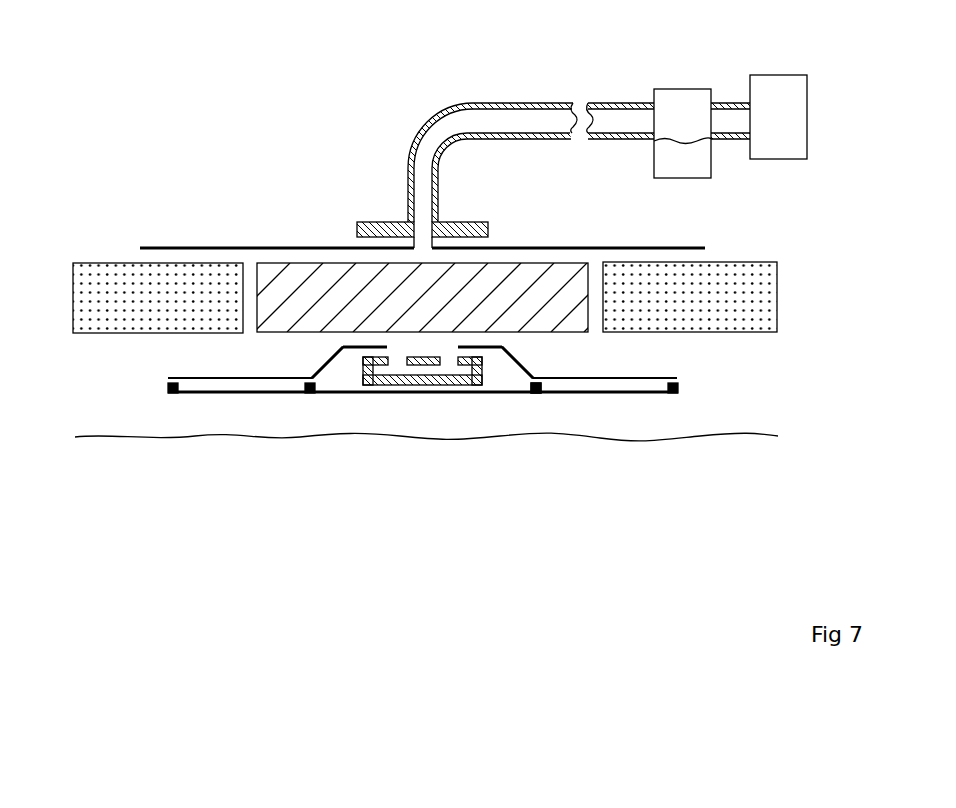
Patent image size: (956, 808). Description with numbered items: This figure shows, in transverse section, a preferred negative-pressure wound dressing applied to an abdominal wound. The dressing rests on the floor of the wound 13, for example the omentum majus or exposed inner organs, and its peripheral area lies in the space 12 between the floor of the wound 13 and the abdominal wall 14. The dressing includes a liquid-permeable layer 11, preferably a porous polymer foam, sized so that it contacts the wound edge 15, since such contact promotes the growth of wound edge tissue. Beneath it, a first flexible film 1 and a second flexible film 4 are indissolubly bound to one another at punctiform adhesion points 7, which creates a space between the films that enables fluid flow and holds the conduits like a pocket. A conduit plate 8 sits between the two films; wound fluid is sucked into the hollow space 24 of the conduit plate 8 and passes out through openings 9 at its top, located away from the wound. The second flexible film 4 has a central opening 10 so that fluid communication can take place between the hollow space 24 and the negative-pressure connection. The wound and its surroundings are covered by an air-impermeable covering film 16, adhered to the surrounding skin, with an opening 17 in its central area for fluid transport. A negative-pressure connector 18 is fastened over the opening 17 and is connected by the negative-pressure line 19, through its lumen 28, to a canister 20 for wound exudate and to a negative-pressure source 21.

The first flexible film 1 is at (627, 394).
The second flexible film 4 is at (662, 394).
The adhesion point 7 is at (535, 395).
The conduit plate 8 is at (457, 387).
The opening in conduit plate 9 is at (397, 362).
The central opening in second film 10 is at (423, 343).
The liquid-permeable layer 11 is at (316, 280).
The space between floor of the wound and abdominal wall 12 is at (655, 347).
The floor of the wound 13 is at (205, 458).
The abdominal wall 14 is at (105, 262).
The wound edge 15 is at (242, 306).
The air-impermeable covering film 16 is at (260, 245).
The opening in covering film 17 is at (422, 248).
The negative-pressure connector 18 is at (367, 222).
The negative-pressure line 19 is at (464, 104).
The canister for wound exudate 20 is at (683, 95).
The negative-pressure source 21 is at (777, 82).
The hollow space in conduit plate 24 is at (377, 372).
The lumen of the negative-pressure line 28 is at (512, 122).